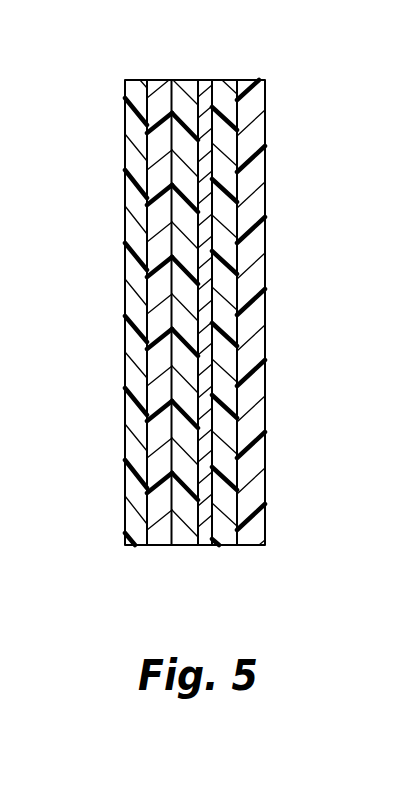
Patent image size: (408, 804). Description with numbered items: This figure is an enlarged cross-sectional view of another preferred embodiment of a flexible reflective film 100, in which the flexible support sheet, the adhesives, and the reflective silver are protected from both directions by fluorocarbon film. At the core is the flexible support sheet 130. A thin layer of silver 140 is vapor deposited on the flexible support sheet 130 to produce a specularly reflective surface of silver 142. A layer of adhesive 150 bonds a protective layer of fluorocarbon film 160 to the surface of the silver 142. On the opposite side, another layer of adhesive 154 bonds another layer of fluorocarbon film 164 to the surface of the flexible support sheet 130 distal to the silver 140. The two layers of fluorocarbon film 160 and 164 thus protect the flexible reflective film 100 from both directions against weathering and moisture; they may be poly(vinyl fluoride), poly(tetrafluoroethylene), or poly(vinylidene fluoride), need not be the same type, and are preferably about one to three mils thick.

The flexible reflective film 100 is at (267, 552).
The fluorocarbon film 164 is at (128, 92).
The adhesive 154 is at (157, 88).
The flexible support sheet 130 is at (178, 88).
The silver 140 is at (205, 88).
The specularly reflective surface of silver 142 is at (216, 90).
The adhesive 150 is at (224, 84).
The fluorocarbon film 160 is at (250, 138).